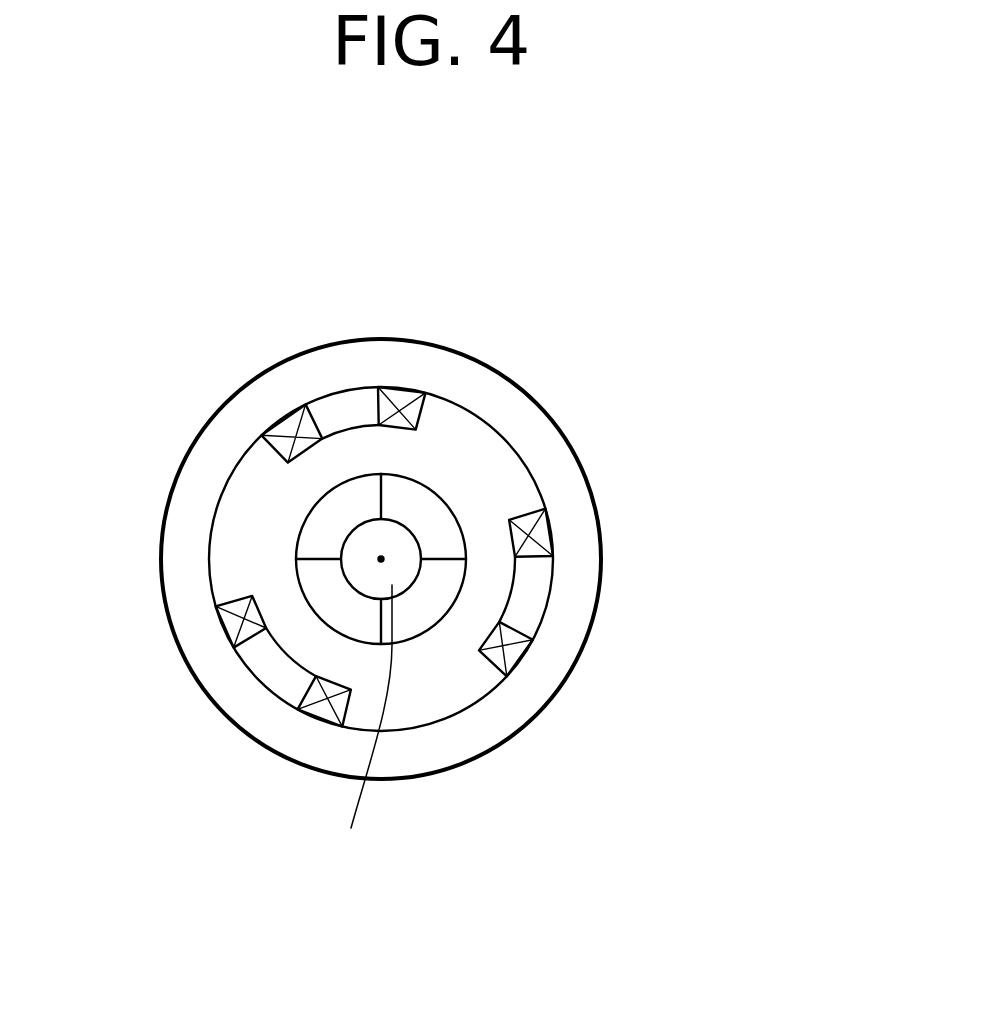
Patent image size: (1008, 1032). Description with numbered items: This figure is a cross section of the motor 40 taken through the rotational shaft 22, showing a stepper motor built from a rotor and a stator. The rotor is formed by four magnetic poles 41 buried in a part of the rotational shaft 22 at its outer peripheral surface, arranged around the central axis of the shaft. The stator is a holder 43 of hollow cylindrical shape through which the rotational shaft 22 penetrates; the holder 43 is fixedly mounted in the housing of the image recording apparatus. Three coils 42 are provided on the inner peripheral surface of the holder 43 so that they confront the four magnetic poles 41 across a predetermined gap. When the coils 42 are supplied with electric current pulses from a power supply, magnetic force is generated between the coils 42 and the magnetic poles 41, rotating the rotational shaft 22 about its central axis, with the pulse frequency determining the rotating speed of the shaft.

The motor 40 is at (682, 332).
The magnetic poles 41 is at (453, 501).
The coils 42 is at (425, 412).
The holder 43 is at (583, 613).
The rotational shaft 22 is at (381, 578).